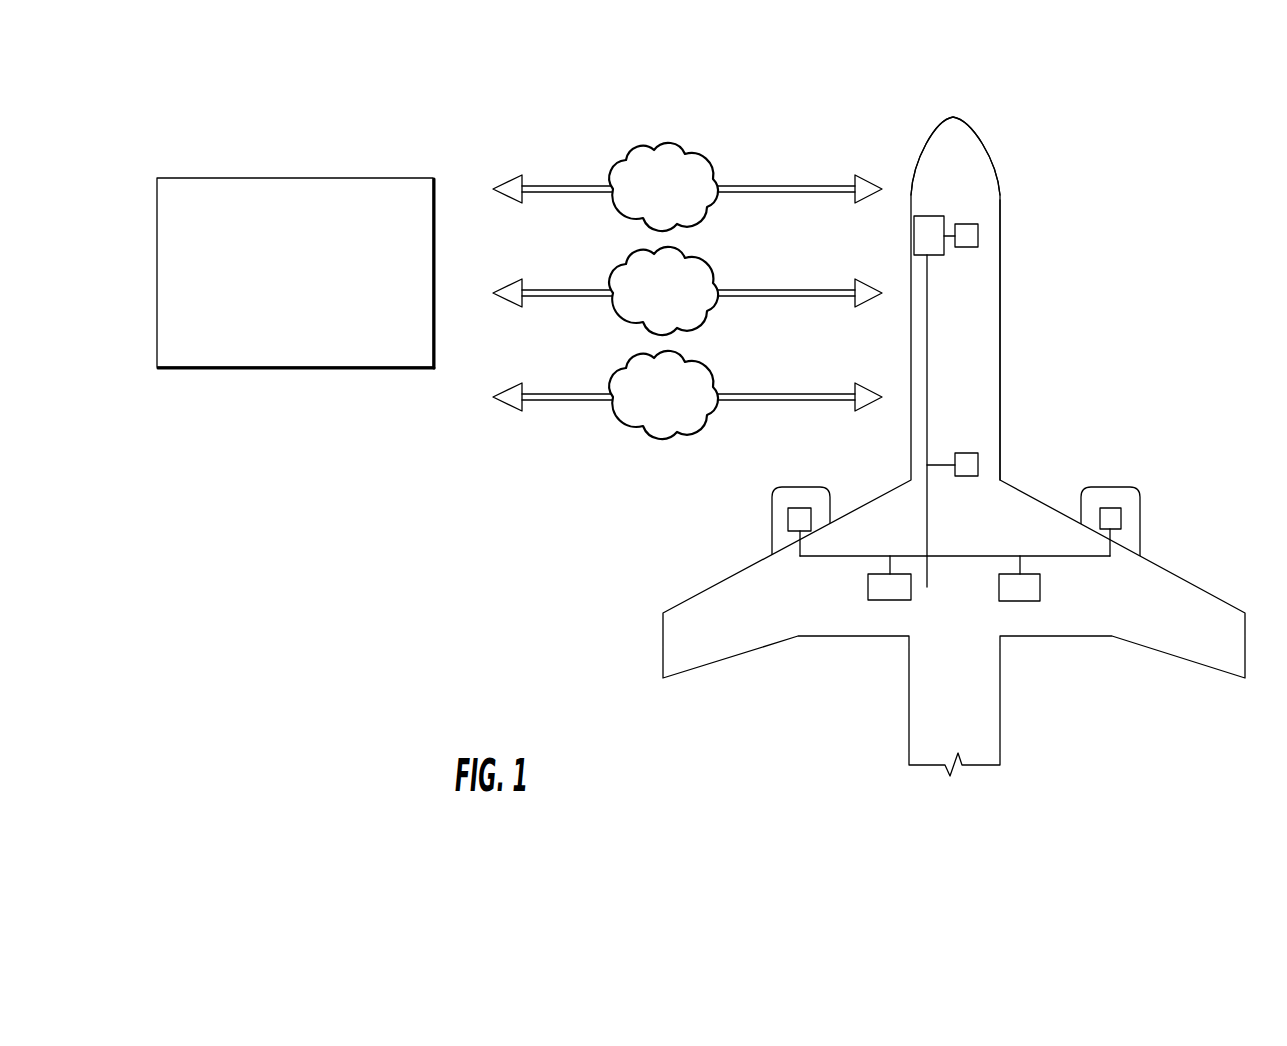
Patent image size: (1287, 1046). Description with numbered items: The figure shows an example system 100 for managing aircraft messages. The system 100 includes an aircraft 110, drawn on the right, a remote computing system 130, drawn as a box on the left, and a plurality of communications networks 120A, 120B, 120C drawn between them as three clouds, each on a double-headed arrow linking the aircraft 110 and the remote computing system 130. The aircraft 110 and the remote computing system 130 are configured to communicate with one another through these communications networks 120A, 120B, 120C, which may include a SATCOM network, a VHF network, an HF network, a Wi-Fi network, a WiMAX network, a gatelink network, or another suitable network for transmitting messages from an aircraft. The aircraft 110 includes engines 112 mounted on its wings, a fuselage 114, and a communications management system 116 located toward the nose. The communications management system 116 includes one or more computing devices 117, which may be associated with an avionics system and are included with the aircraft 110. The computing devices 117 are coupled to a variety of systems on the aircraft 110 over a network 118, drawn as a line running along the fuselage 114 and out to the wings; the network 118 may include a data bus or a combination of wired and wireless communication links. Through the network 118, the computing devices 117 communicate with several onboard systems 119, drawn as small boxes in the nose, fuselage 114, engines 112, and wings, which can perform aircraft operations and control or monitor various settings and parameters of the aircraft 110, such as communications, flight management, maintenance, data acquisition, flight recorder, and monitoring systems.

The system 100 is at (300, 90).
The aircraft 110 is at (1045, 313).
The engine 112 is at (795, 488).
The fuselage 114 is at (983, 394).
The communications management system 116 is at (934, 200).
The computing device 117 is at (914, 241).
The network 118 is at (927, 367).
The onboard system 119 is at (979, 238).
The communications network 120A is at (641, 199).
The communications network 120B is at (641, 303).
The communications network 120C is at (641, 407).
The remote computing system 130 is at (276, 282).